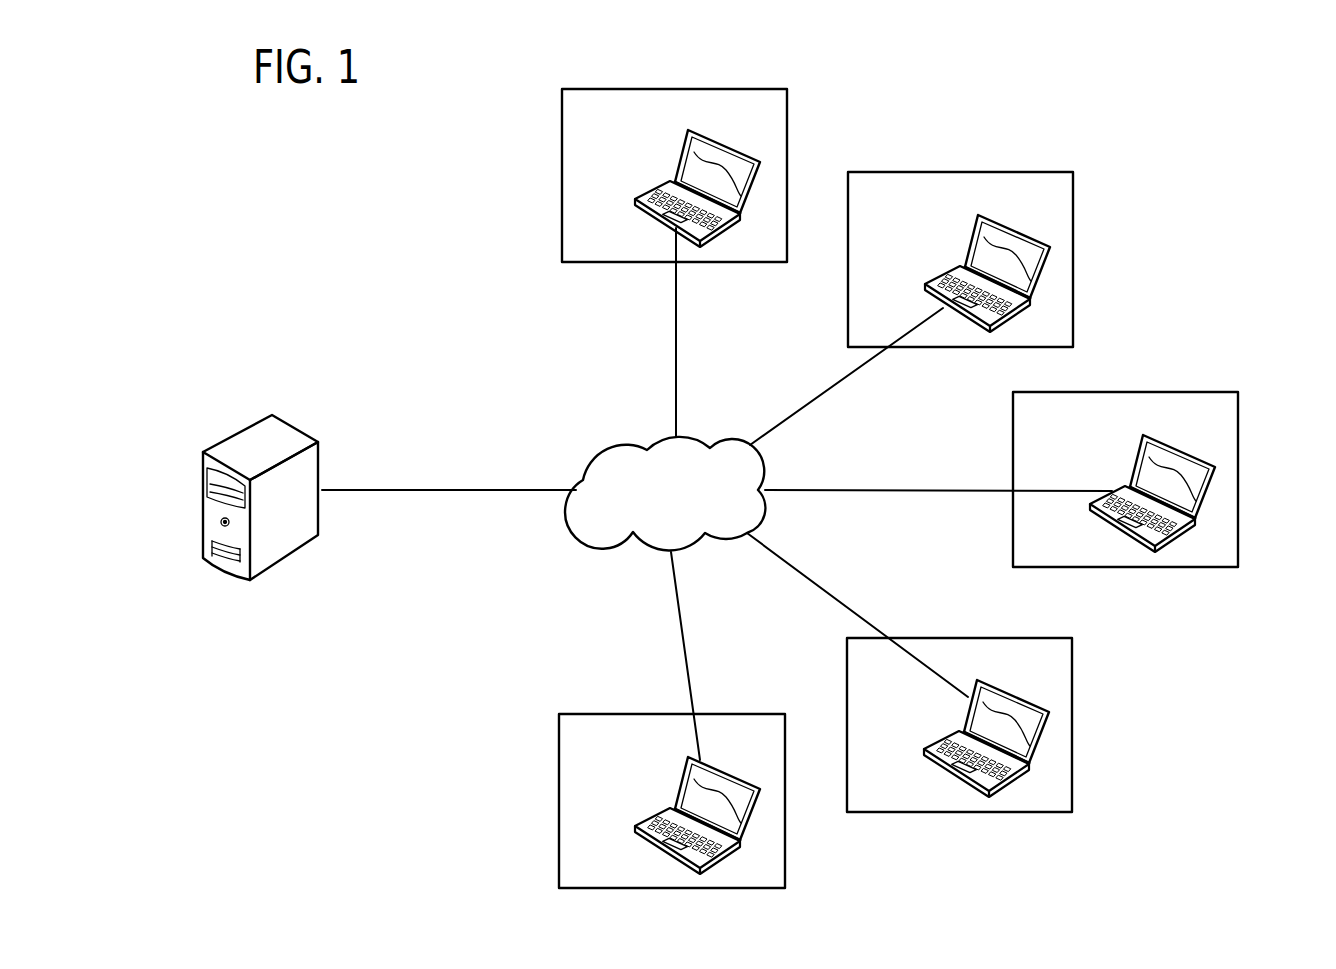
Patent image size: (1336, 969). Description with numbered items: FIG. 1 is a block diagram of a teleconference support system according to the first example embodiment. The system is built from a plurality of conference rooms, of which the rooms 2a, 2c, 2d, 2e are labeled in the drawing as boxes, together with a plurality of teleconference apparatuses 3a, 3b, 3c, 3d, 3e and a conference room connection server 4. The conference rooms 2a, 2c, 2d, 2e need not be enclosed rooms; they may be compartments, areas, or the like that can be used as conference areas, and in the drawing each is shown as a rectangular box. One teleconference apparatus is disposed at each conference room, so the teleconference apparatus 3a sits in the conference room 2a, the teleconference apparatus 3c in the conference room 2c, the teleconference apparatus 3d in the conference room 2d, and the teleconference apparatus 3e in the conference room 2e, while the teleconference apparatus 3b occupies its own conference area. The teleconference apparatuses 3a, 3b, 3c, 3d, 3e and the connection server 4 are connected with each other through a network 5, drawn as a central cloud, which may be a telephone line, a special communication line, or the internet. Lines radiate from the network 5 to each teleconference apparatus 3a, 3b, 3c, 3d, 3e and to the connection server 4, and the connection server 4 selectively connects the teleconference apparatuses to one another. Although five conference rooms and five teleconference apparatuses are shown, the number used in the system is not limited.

The conference room 2a is at (608, 126).
The conference room 2c is at (1059, 428).
The conference room 2d is at (895, 674).
The conference room 2e is at (608, 750).
The teleconference apparatus 3a is at (757, 180).
The teleconference apparatus 3b is at (1020, 273).
The teleconference apparatus 3c is at (1184, 493).
The teleconference apparatus 3d is at (1019, 738).
The teleconference apparatus 3e is at (730, 815).
The conference room connection server 4 is at (250, 430).
The network 5 is at (620, 448).